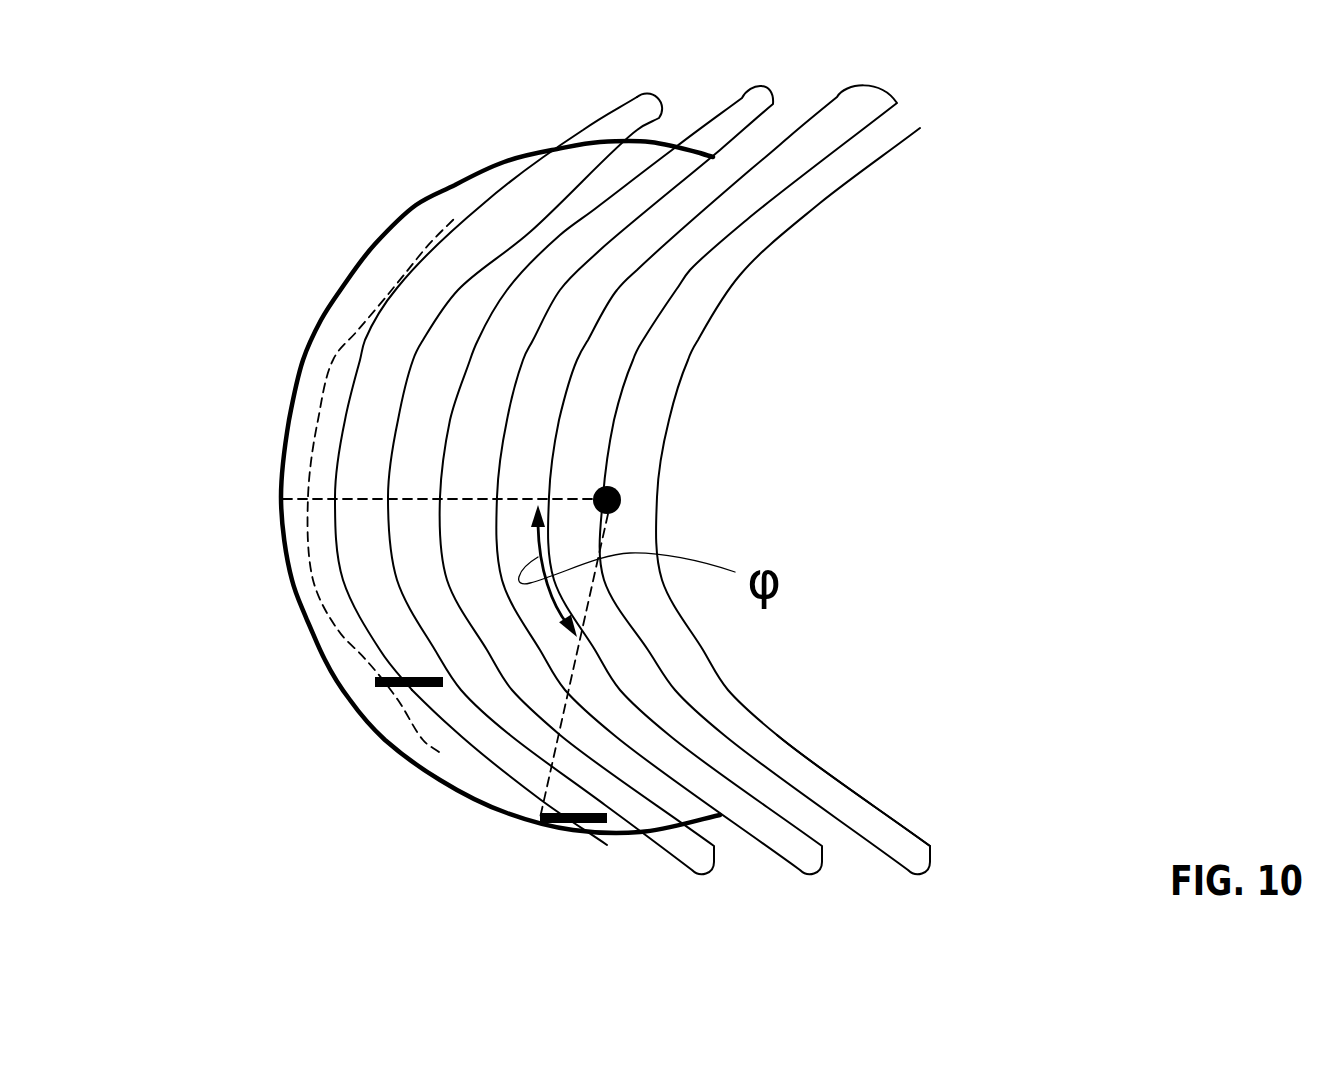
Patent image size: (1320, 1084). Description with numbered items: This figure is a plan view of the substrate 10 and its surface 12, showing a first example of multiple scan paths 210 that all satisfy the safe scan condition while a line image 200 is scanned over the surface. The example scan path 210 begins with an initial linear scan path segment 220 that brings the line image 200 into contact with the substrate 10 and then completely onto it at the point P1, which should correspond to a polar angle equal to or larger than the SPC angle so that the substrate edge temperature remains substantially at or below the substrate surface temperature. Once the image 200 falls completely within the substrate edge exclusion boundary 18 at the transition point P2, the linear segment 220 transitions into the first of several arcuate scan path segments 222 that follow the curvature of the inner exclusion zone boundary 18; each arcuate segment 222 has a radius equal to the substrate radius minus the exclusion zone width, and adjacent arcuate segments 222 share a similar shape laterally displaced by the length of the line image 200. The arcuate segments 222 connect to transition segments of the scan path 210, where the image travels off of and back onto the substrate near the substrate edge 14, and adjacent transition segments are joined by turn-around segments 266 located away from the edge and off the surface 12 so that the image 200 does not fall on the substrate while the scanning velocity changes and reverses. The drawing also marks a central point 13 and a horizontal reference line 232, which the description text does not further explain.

The substrate 10 is at (330, 243).
The substrate surface 12 is at (781, 490).
The center of rotation of the eye 13 is at (613, 492).
The substrate edge 14 is at (293, 393).
The substrate edge exclusion boundary 18 is at (348, 322).
The line image 200 is at (558, 823).
The scan path 210 is at (580, 121).
The initial linear scan path segment 220 is at (485, 765).
The arcuate scan path segments 222 is at (335, 542).
The horizontal reference axis 232 is at (295, 500).
The turn-around segments 266 is at (930, 862).
The point P1 is at (502, 825).
The transition point P2 is at (352, 693).